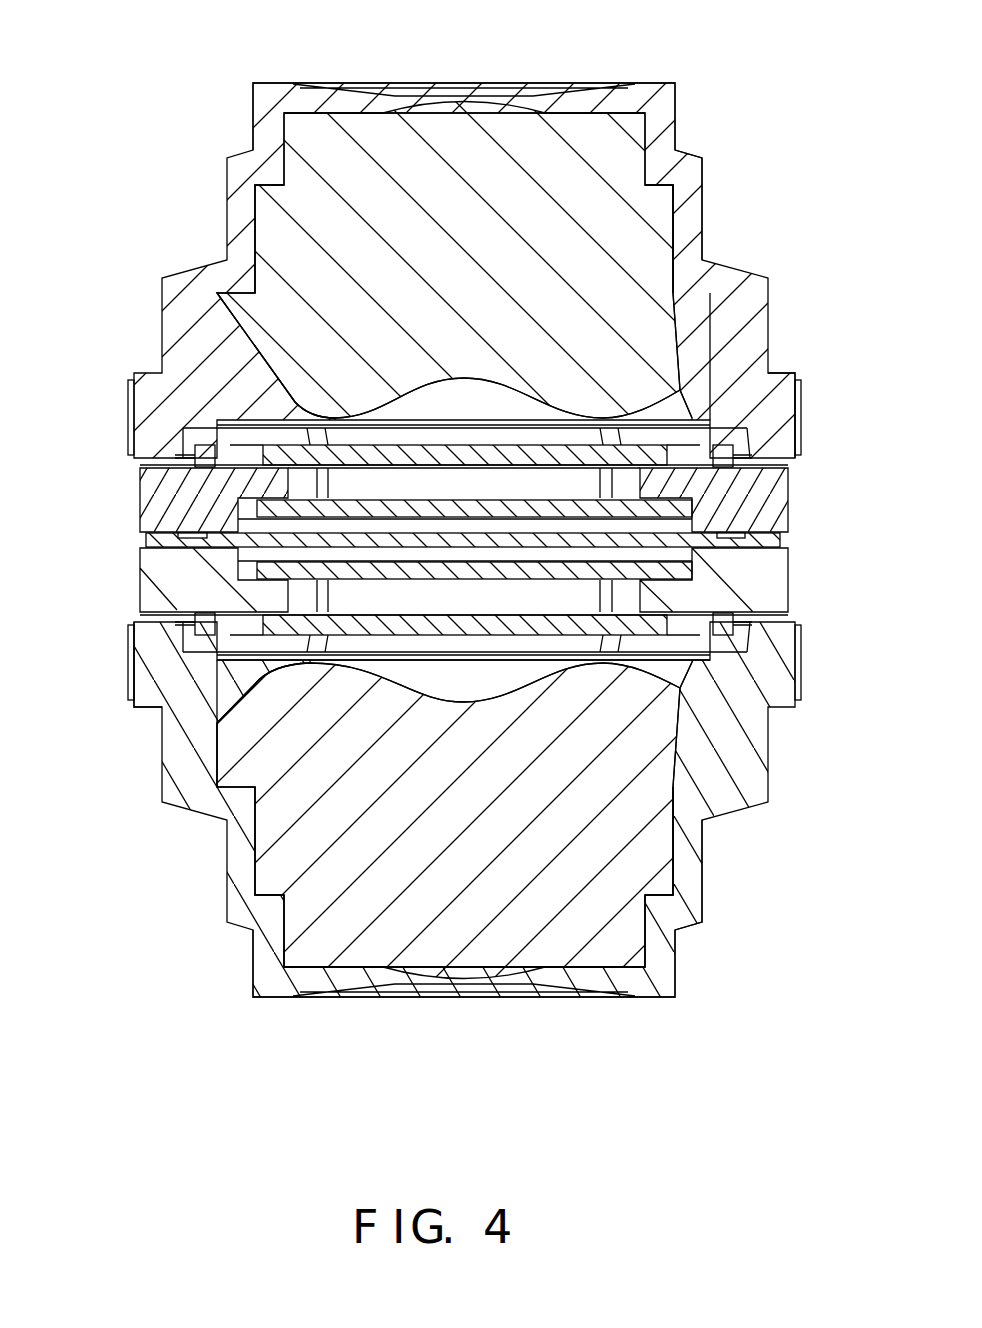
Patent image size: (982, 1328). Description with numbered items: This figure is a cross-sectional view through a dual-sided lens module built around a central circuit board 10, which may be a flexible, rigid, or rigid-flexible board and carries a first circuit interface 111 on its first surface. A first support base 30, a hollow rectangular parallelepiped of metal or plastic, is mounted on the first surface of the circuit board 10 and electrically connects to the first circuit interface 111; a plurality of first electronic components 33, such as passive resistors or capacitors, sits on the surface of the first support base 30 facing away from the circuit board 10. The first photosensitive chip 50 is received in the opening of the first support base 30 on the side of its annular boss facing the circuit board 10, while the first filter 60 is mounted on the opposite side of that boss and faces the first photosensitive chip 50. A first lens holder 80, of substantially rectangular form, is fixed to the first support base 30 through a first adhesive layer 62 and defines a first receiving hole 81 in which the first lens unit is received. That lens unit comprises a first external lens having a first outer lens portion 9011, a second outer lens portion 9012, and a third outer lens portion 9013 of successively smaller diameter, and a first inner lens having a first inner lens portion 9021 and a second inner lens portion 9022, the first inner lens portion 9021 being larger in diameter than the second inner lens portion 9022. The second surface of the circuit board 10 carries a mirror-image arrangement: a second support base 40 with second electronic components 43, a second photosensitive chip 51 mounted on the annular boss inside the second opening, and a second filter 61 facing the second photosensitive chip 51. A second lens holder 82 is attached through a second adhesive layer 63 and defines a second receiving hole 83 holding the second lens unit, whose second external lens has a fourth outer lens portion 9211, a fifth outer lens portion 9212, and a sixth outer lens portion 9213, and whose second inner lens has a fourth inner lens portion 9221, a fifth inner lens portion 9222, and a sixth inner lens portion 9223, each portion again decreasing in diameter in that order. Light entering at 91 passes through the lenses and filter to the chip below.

The circuit board 10 is at (163, 540).
The first circuit interface 111 is at (747, 537).
The first support base 30 is at (760, 503).
The first electronic components 33 is at (728, 457).
The second support base 40 is at (175, 578).
The second electronic components 43 is at (215, 623).
The first photosensitive chip 50 is at (637, 507).
The second photosensitive chip 51 is at (637, 572).
The first filter 60 is at (265, 447).
The second filter 61 is at (713, 654).
The first adhesive layer 62 is at (155, 465).
The second adhesive layer 63 is at (645, 627).
The first lens holder 80 is at (770, 420).
The first receiving hole 81 is at (450, 400).
The second lens holder 82 is at (157, 662).
The second receiving hole 83 is at (493, 678).
The light incident surface 91 is at (497, 93).
The first outer lens portion 9011 is at (745, 325).
The second outer lens portion 9012 is at (688, 232).
The third outer lens portion 9013 is at (657, 135).
The first inner lens portion 9021 is at (310, 148).
The second inner lens portion 9022 is at (280, 232).
The fourth outer lens portion 9211 is at (745, 778).
The fifth outer lens portion 9212 is at (688, 870).
The sixth outer lens portion 9213 is at (657, 925).
The fourth inner lens portion 9221 is at (230, 728).
The fifth inner lens portion 9222 is at (300, 820).
The sixth inner lens portion 9223 is at (300, 920).